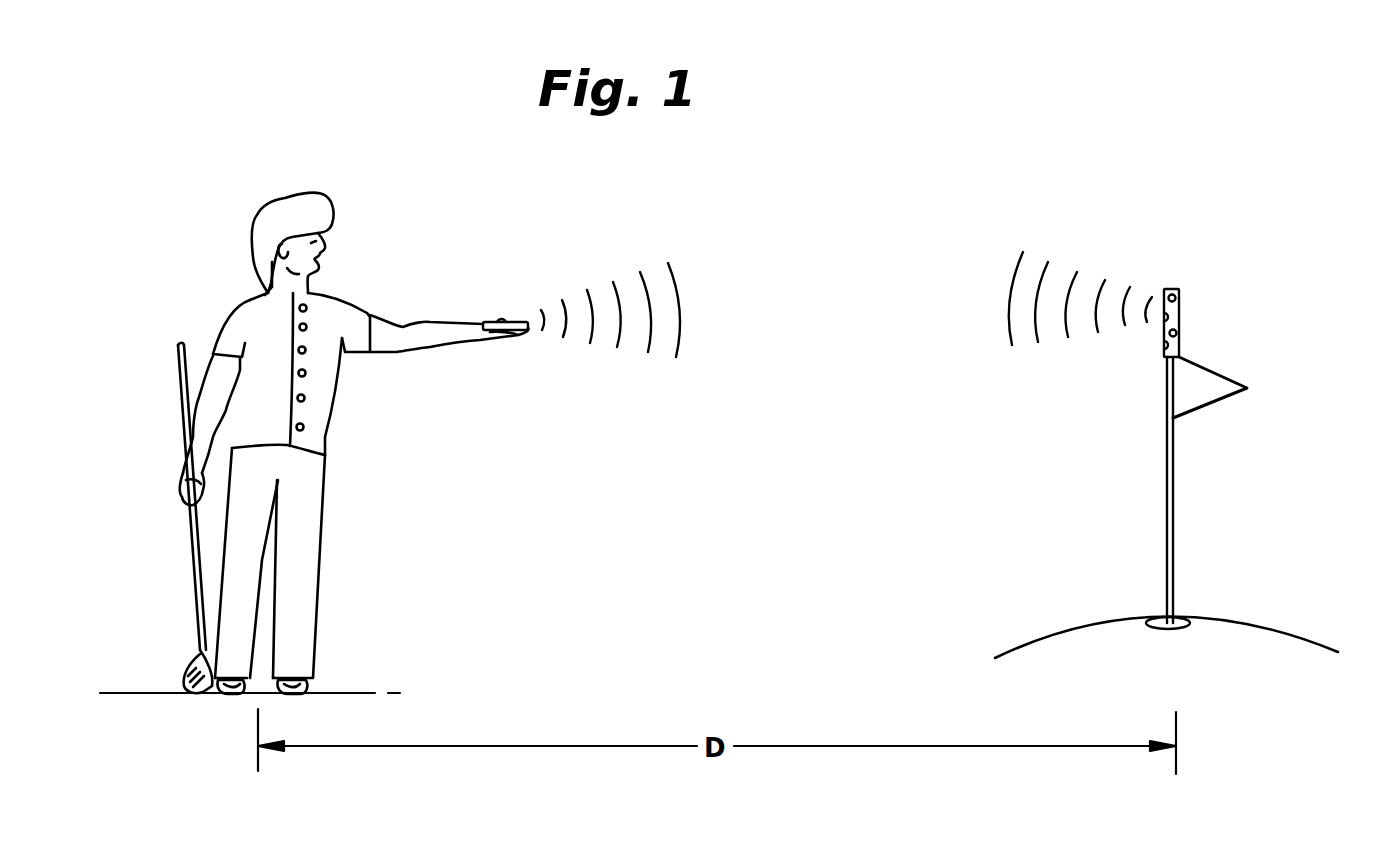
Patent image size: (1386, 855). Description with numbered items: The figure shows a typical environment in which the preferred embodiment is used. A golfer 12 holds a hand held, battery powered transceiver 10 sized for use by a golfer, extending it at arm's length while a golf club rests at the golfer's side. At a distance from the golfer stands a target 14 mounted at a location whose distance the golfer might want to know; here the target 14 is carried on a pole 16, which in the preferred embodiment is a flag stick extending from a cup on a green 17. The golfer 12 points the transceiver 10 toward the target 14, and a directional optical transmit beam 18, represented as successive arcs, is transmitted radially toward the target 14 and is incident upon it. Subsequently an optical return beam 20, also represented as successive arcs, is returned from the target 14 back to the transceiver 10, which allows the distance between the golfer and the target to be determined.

The transceiver 10 is at (517, 320).
The golfer 12 is at (335, 387).
The target 14 is at (1182, 312).
The pole 16 is at (1167, 455).
The green 17 is at (1178, 620).
The optical transmit beam 18 is at (677, 268).
The optical return beam 20 is at (1017, 270).